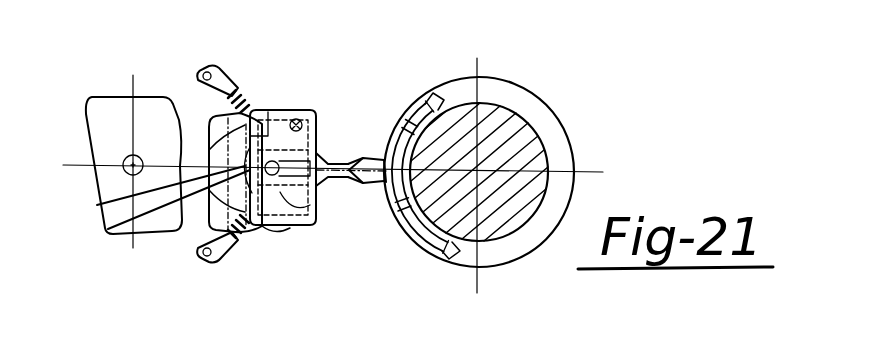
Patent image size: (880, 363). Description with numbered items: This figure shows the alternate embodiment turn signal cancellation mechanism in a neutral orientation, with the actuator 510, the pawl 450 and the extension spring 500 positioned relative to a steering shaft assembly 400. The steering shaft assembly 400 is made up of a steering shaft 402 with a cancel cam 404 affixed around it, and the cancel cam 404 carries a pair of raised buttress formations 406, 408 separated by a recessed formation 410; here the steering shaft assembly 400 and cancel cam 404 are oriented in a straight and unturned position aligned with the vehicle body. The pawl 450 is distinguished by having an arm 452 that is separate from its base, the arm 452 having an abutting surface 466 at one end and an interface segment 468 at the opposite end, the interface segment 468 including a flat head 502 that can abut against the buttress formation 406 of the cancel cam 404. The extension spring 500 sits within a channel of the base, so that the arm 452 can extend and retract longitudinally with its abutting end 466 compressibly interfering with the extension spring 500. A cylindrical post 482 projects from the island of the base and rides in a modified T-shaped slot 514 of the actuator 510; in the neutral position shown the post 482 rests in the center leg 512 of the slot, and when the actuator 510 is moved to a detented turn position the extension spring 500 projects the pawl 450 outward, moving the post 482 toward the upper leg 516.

The steering shaft assembly 400 is at (522, 179).
The steering shaft 402 is at (497, 143).
The cancel cam 404 is at (507, 248).
The buttress formation 406 is at (440, 255).
The buttress formation 408 is at (422, 95).
The recessed formation 410 is at (396, 208).
The pawl 450 is at (215, 160).
The arm 452 is at (338, 183).
The abutting surface 466 is at (145, 194).
The interface segment 468 is at (365, 163).
The cylindrical post 482 is at (258, 232).
The extension spring 500 is at (259, 112).
The head 502 is at (381, 173).
The actuator 510 is at (101, 131).
The center leg 512 is at (108, 229).
The modified T-shaped slot 514 is at (298, 120).
The upper leg 516 is at (283, 230).